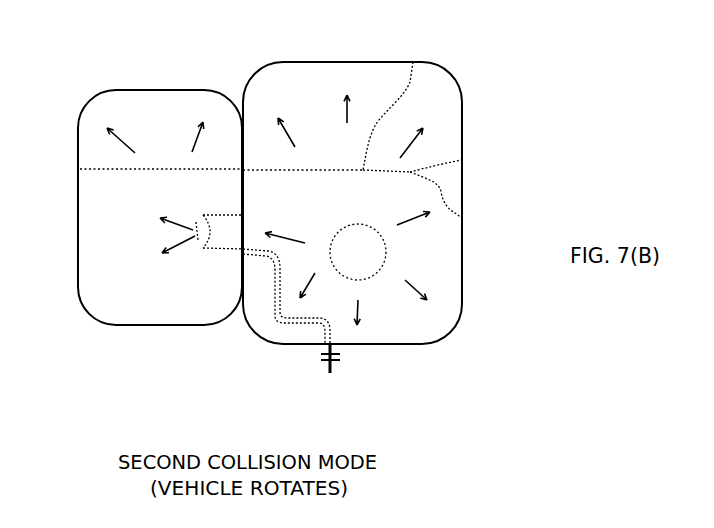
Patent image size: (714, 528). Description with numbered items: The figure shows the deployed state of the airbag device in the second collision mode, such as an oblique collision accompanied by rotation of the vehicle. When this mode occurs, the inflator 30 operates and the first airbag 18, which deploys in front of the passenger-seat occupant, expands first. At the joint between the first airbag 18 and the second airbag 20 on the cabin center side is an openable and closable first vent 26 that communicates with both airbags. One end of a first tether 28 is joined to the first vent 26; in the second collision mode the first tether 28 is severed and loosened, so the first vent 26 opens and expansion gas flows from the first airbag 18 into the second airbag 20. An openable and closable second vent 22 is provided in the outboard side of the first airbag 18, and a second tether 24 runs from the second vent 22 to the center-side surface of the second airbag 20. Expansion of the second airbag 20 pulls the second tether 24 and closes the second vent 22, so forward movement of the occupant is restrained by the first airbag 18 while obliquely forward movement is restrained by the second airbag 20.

The first airbag 18 is at (462, 110).
The second airbag 20 is at (100, 322).
The second vent 22 is at (462, 218).
The second tether 24 is at (413, 62).
The first vent 26 is at (222, 250).
The first tether 28 is at (295, 320).
The inflator 30 is at (373, 275).